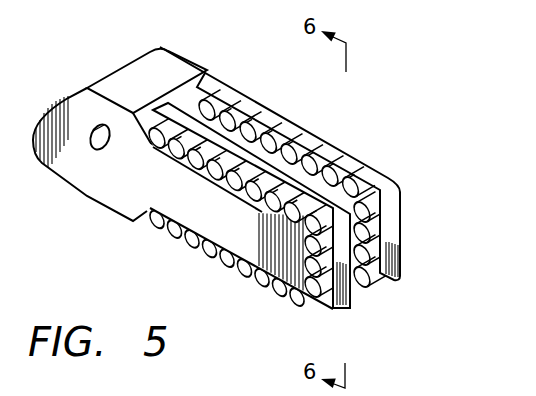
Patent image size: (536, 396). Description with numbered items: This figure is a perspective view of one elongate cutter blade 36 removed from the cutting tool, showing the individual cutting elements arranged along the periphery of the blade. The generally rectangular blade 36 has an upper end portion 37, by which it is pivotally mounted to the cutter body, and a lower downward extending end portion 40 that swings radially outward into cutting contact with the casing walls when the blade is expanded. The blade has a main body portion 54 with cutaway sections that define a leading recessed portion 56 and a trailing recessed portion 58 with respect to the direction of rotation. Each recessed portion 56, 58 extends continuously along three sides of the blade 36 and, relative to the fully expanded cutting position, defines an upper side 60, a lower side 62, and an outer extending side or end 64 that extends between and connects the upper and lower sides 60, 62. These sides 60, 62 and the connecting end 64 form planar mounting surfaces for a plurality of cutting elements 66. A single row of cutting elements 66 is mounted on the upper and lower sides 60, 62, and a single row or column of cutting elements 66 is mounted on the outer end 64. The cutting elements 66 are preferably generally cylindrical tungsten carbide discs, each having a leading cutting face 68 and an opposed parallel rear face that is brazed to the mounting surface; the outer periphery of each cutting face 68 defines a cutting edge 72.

The elongate cutter blade 36 is at (325, 131).
The upper end portion 37 is at (53, 152).
The lower downward extending end portion 40 is at (243, 272).
The main body portion 54 is at (185, 97).
The leading recessed portion 56 is at (331, 308).
The trailing recessed portion 58 is at (372, 230).
The upper side 60 is at (275, 133).
The lower side 62 is at (278, 300).
The outer extending side or end 64 is at (374, 251).
The cutting element 66 is at (250, 138).
The leading cutting face 68 is at (207, 253).
The cutting edge 72 is at (222, 265).